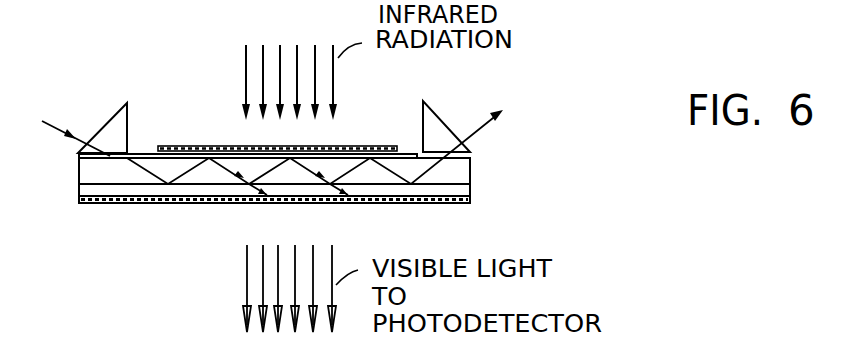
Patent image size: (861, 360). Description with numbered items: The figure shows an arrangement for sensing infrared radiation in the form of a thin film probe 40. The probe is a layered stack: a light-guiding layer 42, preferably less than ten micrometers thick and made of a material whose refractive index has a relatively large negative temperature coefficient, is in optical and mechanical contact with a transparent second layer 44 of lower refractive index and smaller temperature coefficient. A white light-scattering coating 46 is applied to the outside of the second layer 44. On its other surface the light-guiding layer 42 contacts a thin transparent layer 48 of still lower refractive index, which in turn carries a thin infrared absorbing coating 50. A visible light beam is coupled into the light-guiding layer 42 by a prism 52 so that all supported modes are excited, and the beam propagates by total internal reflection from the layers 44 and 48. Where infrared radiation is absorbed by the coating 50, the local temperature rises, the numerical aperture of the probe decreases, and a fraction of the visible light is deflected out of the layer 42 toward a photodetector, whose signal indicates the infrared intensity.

The thin film probe 40 is at (251, 180).
The light-guiding layer 42 is at (465, 171).
The transparent second layer 44 is at (472, 188).
The white light-scattering coating 46 is at (471, 198).
The thin transparent layer 48 is at (144, 154).
The infrared absorbing coating 50 is at (362, 146).
The prism 52 is at (109, 113).